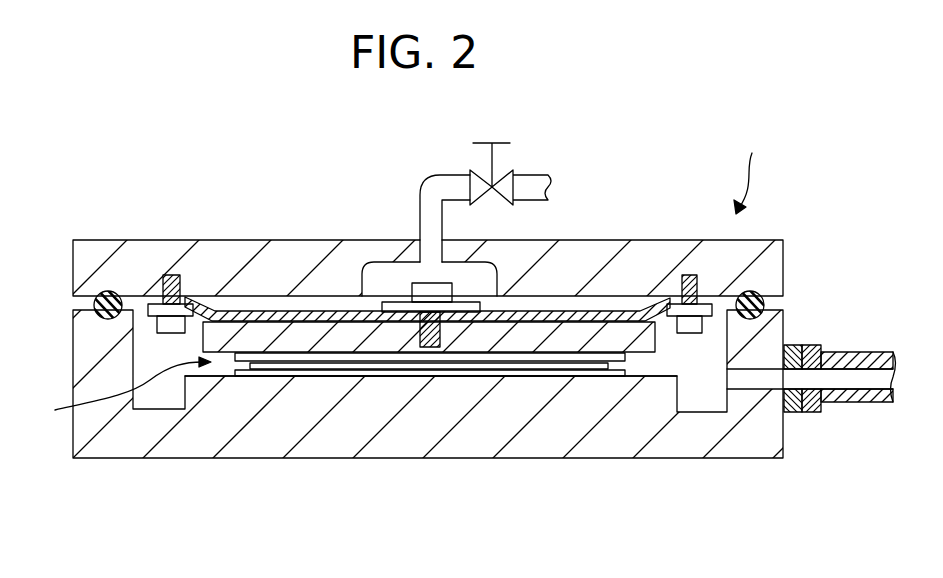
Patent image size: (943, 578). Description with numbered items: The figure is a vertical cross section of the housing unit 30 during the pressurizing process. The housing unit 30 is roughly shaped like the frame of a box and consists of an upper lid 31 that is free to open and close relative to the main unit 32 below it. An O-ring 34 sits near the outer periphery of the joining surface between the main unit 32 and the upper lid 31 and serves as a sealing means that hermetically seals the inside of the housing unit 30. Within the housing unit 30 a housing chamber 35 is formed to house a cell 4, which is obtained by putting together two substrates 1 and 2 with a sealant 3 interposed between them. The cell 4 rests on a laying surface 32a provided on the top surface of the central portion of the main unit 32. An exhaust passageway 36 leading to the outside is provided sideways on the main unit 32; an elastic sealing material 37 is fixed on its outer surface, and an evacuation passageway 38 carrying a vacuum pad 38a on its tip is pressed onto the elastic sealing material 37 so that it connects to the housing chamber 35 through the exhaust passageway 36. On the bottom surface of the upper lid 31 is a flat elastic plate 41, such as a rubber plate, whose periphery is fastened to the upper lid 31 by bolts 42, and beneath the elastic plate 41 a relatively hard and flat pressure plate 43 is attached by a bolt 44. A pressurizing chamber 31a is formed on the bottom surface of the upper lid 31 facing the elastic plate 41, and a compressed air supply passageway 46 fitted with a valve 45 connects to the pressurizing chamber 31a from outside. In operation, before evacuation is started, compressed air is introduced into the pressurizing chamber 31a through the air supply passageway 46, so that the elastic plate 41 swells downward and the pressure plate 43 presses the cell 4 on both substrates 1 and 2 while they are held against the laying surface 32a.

The substrate 1 is at (278, 352).
The substrate 2 is at (337, 372).
The sealant 3 is at (477, 363).
The cell 4 is at (123, 392).
The housing unit 30 is at (753, 170).
The upper lid 31 is at (148, 255).
The pressurizing chamber 31a is at (400, 243).
The main unit 32 is at (175, 440).
The laying surface 32a is at (662, 335).
The O-ring 34 is at (92, 303).
The housing chamber 35 is at (702, 353).
The exhaust passageway 36 is at (745, 378).
The elastic sealing material 37 is at (790, 412).
The evacuation passageway 38 is at (873, 402).
The vacuum pad 38a is at (815, 412).
The elastic plate 41 is at (613, 310).
The bolts 42 is at (155, 334).
The pressure plate 43 is at (585, 338).
The bolt 44 is at (430, 348).
The valve 45 is at (500, 176).
The compressed air supply passageway 46 is at (465, 185).